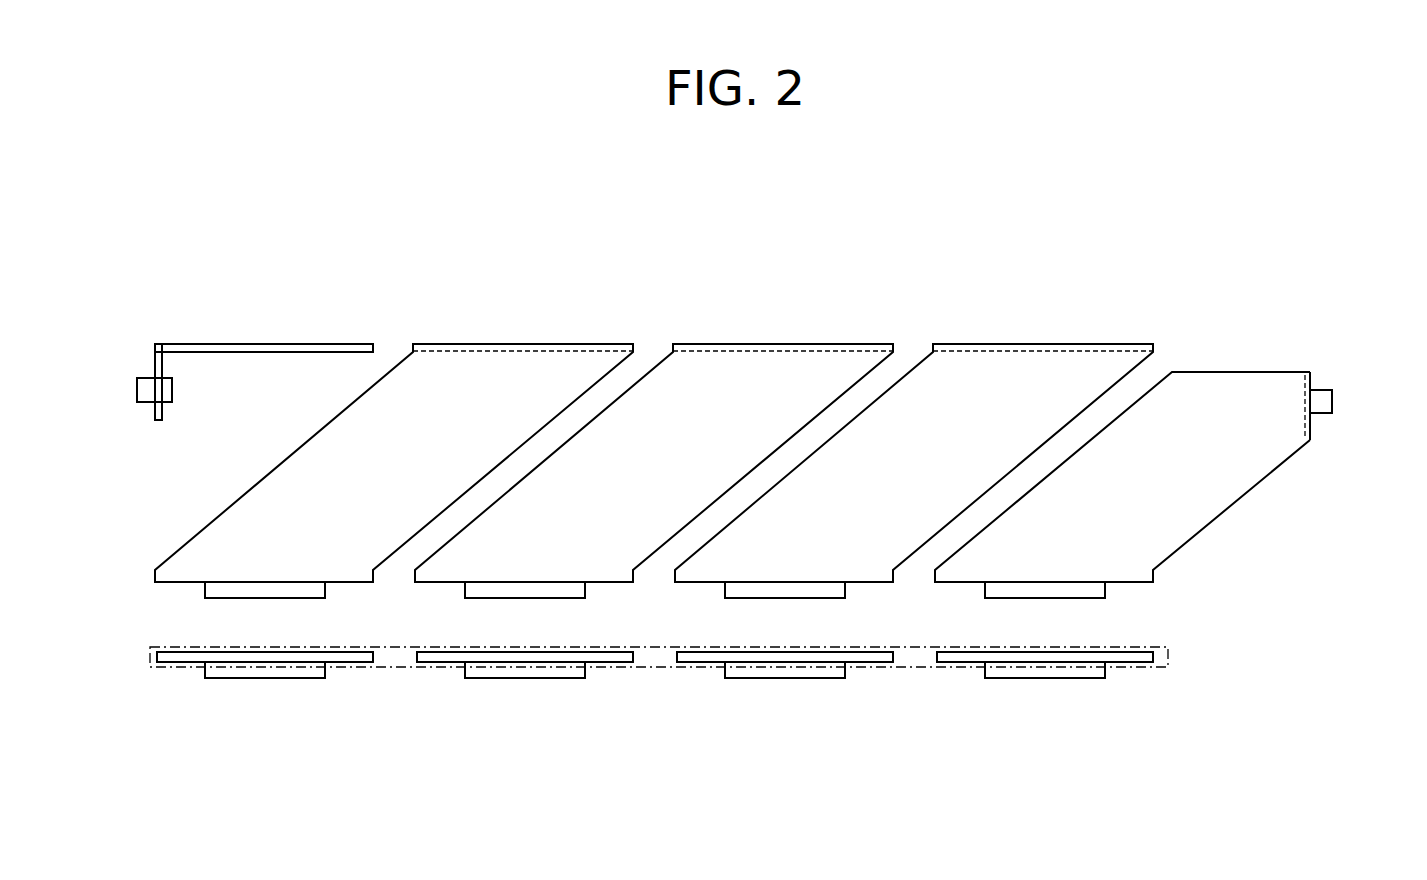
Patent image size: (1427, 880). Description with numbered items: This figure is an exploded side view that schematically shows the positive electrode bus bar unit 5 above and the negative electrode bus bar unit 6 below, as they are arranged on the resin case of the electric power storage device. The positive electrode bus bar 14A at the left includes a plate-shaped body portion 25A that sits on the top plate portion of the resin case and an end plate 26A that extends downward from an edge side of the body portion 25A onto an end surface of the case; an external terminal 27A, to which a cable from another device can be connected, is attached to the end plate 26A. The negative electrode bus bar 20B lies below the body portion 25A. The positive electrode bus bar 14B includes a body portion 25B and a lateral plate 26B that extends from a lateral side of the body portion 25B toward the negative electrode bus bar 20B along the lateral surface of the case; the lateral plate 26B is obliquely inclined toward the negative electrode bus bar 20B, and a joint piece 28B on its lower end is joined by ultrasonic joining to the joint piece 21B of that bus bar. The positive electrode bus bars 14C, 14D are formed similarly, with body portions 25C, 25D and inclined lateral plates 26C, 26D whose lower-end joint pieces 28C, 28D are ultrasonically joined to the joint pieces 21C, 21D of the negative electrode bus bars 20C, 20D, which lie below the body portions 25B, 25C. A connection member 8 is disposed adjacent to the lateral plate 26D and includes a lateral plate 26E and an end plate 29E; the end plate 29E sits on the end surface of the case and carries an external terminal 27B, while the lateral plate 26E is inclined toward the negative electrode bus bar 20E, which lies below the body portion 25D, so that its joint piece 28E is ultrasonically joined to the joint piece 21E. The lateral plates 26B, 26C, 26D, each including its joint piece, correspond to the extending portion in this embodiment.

The positive electrode bus bar unit 5 is at (881, 290).
The negative electrode bus bar unit 6 is at (679, 695).
The connection member 8 is at (1310, 262).
The positive electrode bus bar 14A is at (127, 262).
The positive electrode bus bar 14B is at (448, 262).
The positive electrode bus bar 14C is at (708, 262).
The positive electrode bus bar 14D is at (968, 262).
The body portion 25A is at (218, 343).
The body portion 25B is at (467, 344).
The body portion 25C is at (727, 344).
The body portion 25D is at (987, 344).
The end plate 26A is at (153, 365).
The lateral plate 26B is at (518, 395).
The lateral plate 26C is at (778, 395).
The lateral plate 26D is at (1038, 395).
The lateral plate 26E is at (1228, 395).
The end plate 29E is at (1315, 372).
The external terminal 27A is at (137, 390).
The terminal tab 27B is at (1333, 402).
The joint piece 28B is at (230, 598).
The joint piece 28C is at (490, 598).
The joint piece 28D is at (750, 598).
The joint piece 28E is at (1010, 598).
The negative electrode bus bar 20B is at (335, 657).
The negative electrode bus bar 20C is at (595, 657).
The negative electrode bus bar 20D is at (853, 657).
The negative electrode bus bar 20E is at (1122, 657).
The joint piece 21B is at (278, 676).
The joint piece 21C is at (538, 676).
The joint piece 21D is at (798, 676).
The joint piece 21E is at (1058, 676).